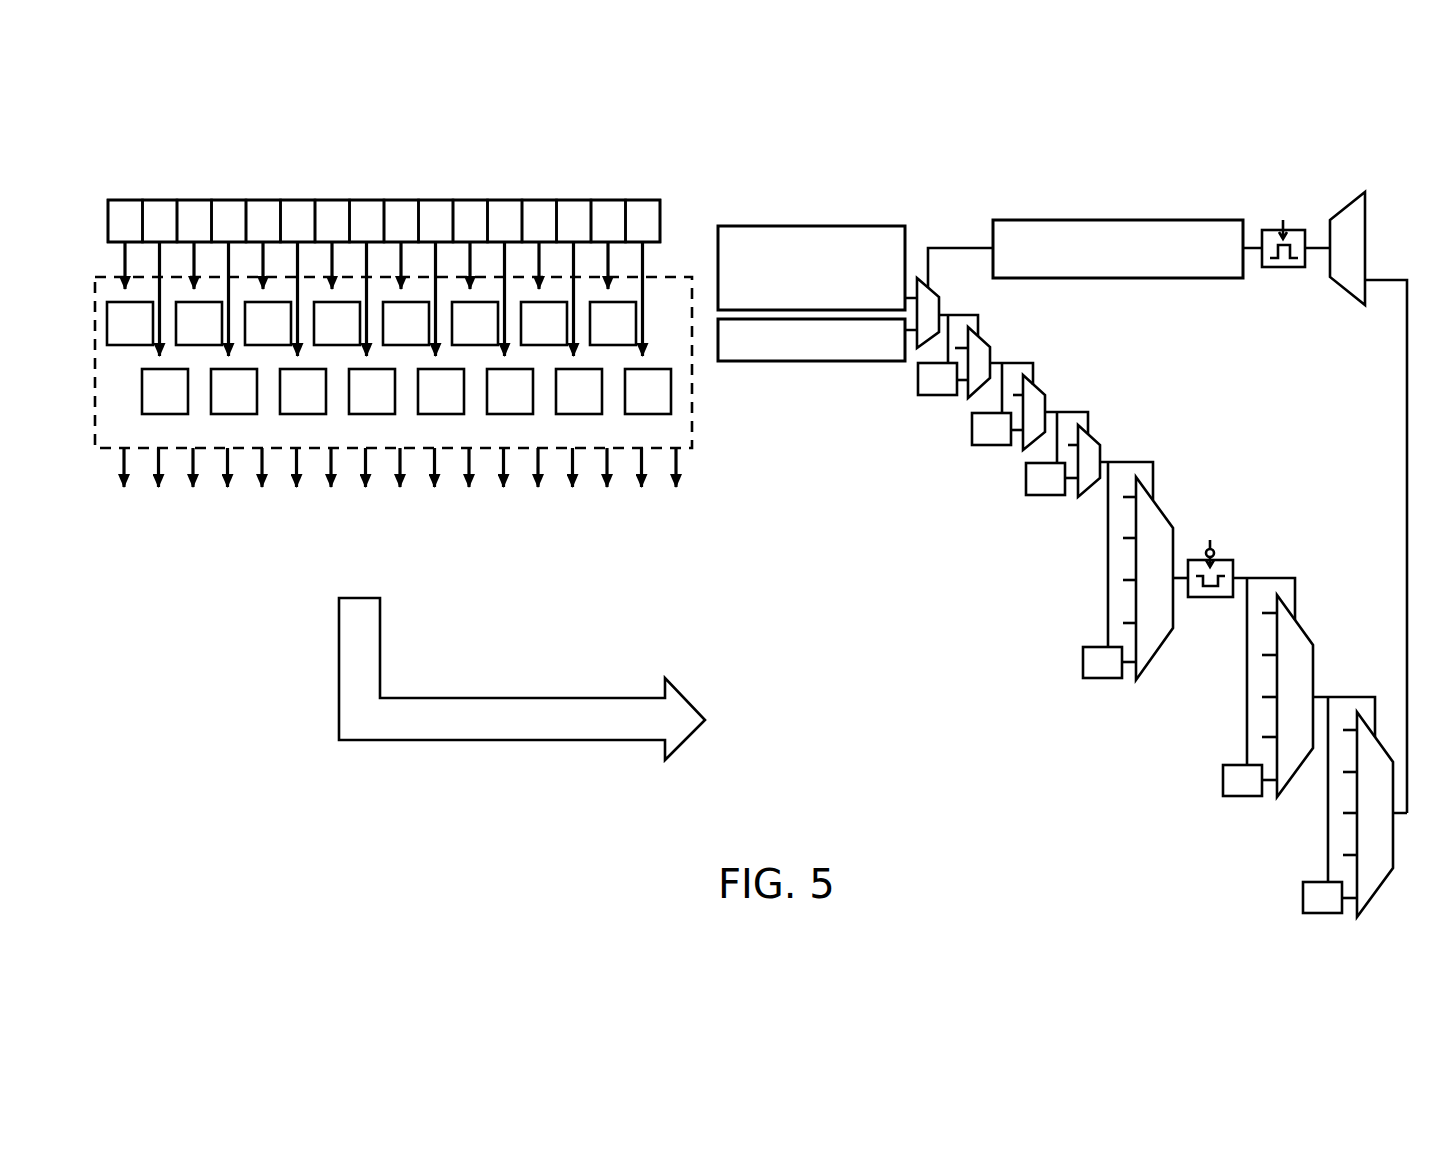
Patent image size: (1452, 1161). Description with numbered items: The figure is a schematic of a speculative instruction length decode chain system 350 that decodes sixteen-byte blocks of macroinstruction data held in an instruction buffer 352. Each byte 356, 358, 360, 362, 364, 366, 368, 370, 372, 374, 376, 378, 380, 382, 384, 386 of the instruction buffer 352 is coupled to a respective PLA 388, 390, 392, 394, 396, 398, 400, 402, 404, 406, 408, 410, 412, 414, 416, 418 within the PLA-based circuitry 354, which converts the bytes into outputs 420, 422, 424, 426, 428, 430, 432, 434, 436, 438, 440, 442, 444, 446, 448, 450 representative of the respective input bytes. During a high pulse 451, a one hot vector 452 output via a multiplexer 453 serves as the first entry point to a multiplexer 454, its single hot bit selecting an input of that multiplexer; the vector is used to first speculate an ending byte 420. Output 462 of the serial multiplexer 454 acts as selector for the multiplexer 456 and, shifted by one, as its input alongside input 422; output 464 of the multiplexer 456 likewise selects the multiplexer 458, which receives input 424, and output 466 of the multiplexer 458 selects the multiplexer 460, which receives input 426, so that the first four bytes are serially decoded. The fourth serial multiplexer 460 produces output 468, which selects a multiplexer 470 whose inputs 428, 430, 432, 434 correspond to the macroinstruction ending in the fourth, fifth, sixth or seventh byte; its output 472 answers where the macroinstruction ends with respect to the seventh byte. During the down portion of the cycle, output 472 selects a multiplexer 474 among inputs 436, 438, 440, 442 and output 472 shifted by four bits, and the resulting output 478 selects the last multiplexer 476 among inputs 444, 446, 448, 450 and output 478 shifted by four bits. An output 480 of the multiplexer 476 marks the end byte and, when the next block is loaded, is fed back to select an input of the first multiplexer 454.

The speculative instruction length decode chain system 350 is at (1412, 194).
The instruction buffer 352 is at (678, 207).
The PLA-based circuitry 354 is at (692, 406).
The first byte 356 is at (125, 200).
The byte 358 is at (160, 200).
The byte 360 is at (194, 200).
The byte 362 is at (228, 200).
The byte 364 is at (263, 200).
The byte 366 is at (298, 200).
The byte 368 is at (332, 200).
The byte 370 is at (366, 200).
The byte 372 is at (401, 200).
The byte 374 is at (436, 200).
The byte 376 is at (470, 200).
The byte 378 is at (504, 200).
The byte 380 is at (539, 200).
The byte 382 is at (574, 200).
The byte 384 is at (608, 200).
The byte 386 is at (642, 200).
The PLA 388 is at (111, 338).
The PLA 390 is at (180, 338).
The PLA 392 is at (249, 338).
The PLA 394 is at (318, 338).
The PLA 396 is at (387, 338).
The PLA 398 is at (456, 338).
The PLA 400 is at (525, 338).
The PLA 402 is at (594, 338).
The PLA 404 is at (146, 405).
The PLA 406 is at (215, 405).
The PLA 408 is at (284, 405).
The PLA 410 is at (353, 405).
The PLA 412 is at (422, 405).
The PLA 414 is at (491, 405).
The PLA 416 is at (560, 405).
The PLA 418 is at (629, 405).
The output 420 is at (120, 468).
The input 422 is at (154, 468).
The input 424 is at (189, 468).
The input 426 is at (224, 468).
The input 428 is at (258, 468).
The input 430 is at (292, 468).
The input 432 is at (327, 468).
The input 434 is at (362, 468).
The input 436 is at (396, 468).
The input 438 is at (430, 468).
The input 440 is at (465, 468).
The input 442 is at (500, 468).
The input 444 is at (534, 468).
The input 446 is at (568, 468).
The input 448 is at (603, 468).
The input 450 is at (638, 468).
The one hot vector 452 is at (672, 468).
The high pulse 451 is at (1280, 232).
The multiplexer 453 is at (1348, 208).
The multiplexer 454 is at (922, 279).
The multiplexer 456 is at (988, 340).
The multiplexer 458 is at (1047, 388).
The multiplexer 460 is at (1095, 440).
The output 462 is at (958, 313).
The output 464 is at (1033, 366).
The output 466 is at (1072, 411).
The output 468 is at (1128, 461).
The multiplexer 470 is at (1160, 514).
The output 472 is at (1180, 572).
The multiplexer 474 is at (1308, 632).
The multiplexer 476 is at (1395, 843).
The output 478 is at (1375, 697).
The output 480 is at (1407, 492).